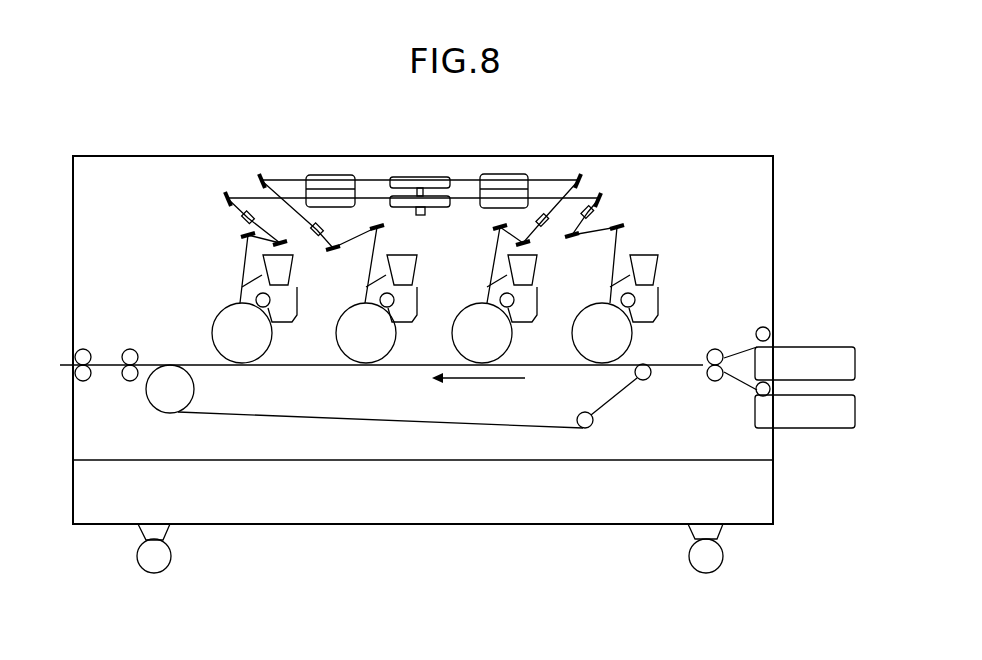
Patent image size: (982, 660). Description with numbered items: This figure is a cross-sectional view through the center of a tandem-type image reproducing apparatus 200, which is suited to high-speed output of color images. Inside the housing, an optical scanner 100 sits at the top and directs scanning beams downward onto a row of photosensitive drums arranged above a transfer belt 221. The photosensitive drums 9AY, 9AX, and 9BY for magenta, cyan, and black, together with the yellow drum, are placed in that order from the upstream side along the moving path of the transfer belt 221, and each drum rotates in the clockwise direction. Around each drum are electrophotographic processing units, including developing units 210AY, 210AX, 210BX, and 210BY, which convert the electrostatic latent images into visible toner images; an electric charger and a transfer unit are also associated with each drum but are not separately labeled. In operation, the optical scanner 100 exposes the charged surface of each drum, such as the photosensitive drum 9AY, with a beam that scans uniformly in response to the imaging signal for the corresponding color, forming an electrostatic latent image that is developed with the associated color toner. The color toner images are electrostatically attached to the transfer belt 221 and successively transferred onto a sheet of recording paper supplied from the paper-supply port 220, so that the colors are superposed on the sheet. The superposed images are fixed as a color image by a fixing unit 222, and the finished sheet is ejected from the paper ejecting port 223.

The image reproducing apparatus 200 is at (702, 156).
The optical scanner 100 is at (628, 195).
The paper ejecting port 223 is at (78, 353).
The fixing unit 222 is at (128, 353).
The transfer belt 221 is at (622, 405).
The paper-supply port 220 is at (713, 348).
The developing unit 210BY is at (320, 268).
The developing unit 210BX is at (442, 258).
The developing unit 210AX is at (556, 270).
The developing unit 210AY is at (680, 265).
The photosensitive drum 9BY is at (272, 343).
The photosensitive drum 9AX is at (395, 343).
The photosensitive drum 9AY is at (632, 343).